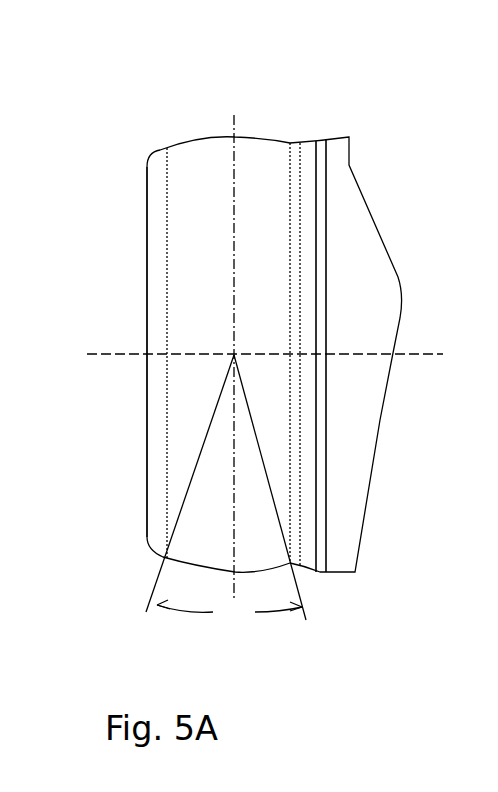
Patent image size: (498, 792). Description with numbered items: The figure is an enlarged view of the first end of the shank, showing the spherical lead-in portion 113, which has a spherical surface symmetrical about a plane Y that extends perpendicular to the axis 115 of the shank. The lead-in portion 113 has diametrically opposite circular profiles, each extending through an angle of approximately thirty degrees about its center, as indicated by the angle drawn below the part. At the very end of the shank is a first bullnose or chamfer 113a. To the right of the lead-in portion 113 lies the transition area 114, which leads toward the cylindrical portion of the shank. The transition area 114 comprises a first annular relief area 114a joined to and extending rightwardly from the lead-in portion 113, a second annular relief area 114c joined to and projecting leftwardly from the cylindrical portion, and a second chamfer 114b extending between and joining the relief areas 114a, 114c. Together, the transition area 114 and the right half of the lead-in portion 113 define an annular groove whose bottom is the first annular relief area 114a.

The spherical lead-in portion 113 is at (210, 138).
The first bullnose or chamfer 113a is at (153, 157).
The transition area 114 is at (292, 623).
The first annular relief area 114a is at (296, 141).
The second chamfer 114b is at (304, 141).
The second annular relief area 114c is at (321, 140).
The axis 115 is at (108, 356).
The plane Y is at (234, 267).